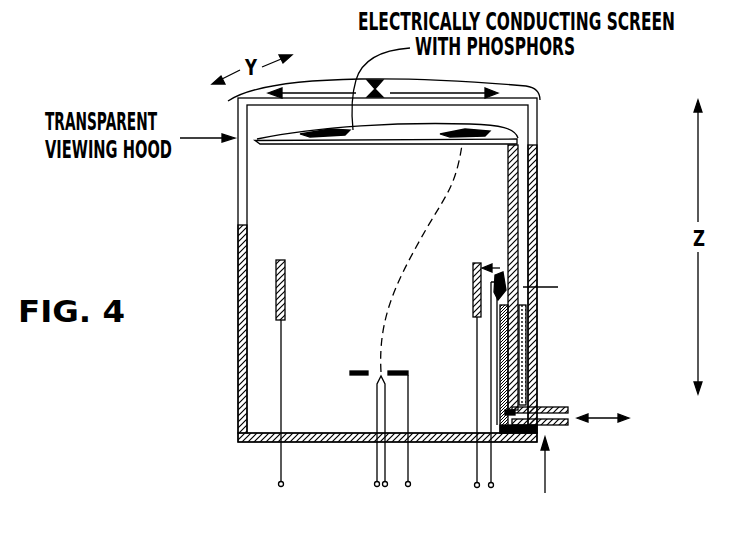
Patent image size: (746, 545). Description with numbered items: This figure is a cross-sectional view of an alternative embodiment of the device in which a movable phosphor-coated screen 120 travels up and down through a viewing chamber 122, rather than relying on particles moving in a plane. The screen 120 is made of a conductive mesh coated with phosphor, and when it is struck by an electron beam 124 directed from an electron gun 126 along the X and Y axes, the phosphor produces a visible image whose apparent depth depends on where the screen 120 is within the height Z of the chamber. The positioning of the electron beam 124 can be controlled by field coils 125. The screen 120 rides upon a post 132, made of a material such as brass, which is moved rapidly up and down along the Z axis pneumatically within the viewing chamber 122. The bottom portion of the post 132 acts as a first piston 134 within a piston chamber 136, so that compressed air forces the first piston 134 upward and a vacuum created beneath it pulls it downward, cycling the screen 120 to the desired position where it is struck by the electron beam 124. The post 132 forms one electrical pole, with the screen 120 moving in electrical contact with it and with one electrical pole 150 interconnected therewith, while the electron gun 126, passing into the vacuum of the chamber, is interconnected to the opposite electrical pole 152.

The phosphor-coated screen 120 is at (273, 145).
The viewing chamber 122 is at (241, 190).
The electron beam 124 is at (398, 262).
The field coils 125 is at (276, 285).
The electron gun 126 is at (375, 453).
The post 132 is at (515, 175).
The first piston 134 is at (533, 325).
The piston chamber 136 is at (537, 357).
The electrical pole 150 is at (495, 475).
The opposite electrical pole 152 is at (408, 448).